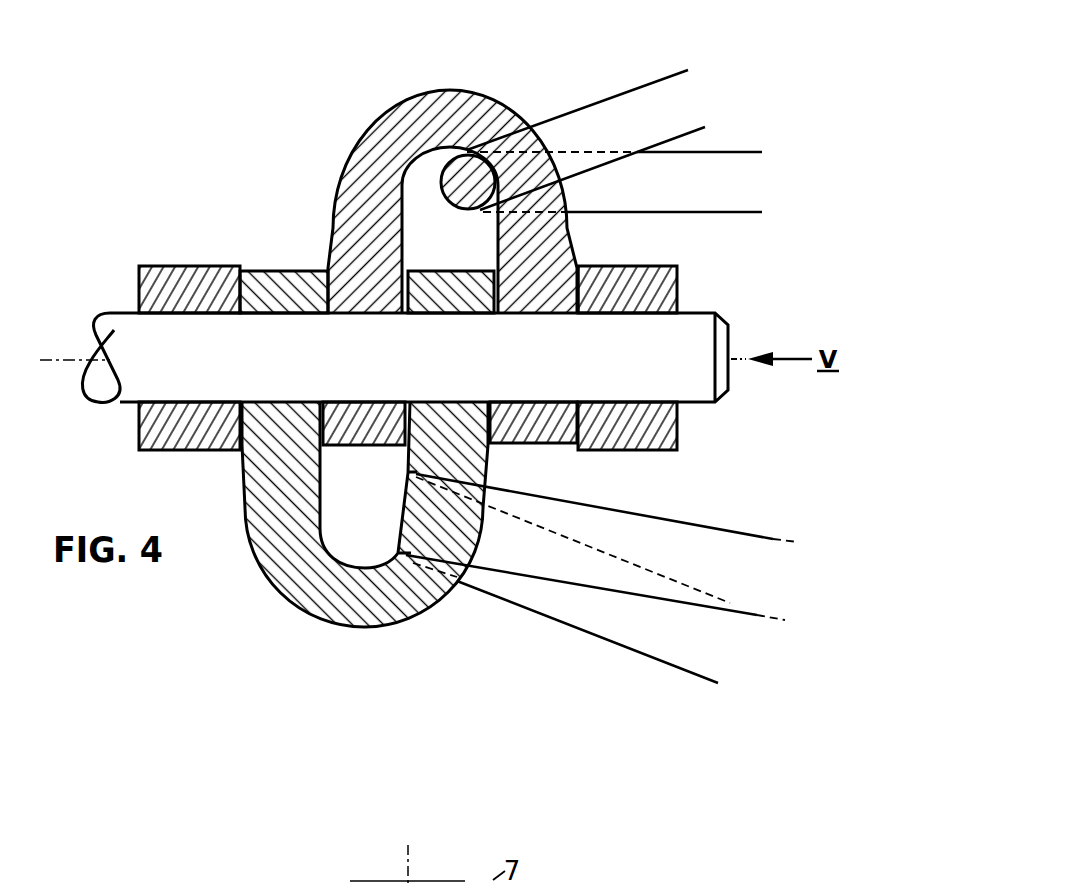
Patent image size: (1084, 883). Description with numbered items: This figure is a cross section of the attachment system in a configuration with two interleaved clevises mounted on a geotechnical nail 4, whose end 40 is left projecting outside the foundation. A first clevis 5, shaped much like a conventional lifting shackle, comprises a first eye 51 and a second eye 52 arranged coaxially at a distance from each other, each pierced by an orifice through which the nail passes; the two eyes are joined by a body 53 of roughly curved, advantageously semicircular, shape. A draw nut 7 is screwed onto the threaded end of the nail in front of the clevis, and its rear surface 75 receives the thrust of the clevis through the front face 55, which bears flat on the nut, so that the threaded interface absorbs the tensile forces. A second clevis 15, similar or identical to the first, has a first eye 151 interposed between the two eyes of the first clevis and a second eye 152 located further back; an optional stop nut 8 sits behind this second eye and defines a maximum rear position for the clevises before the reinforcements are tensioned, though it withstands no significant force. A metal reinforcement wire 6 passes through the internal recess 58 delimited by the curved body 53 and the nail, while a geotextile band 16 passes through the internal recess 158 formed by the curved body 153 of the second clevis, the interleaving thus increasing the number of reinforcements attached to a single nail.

The geotechnical nail 4 is at (384, 349).
The clevis 5 is at (437, 160).
The reinforcement wire 6 is at (627, 110).
The draw nut 7 is at (671, 335).
The stop nut 8 is at (162, 278).
The second clevis 15 is at (351, 557).
The geotextile band 16 is at (728, 538).
The end of the nail 40 is at (680, 378).
The first eye 51 is at (551, 422).
The second eye 52 is at (368, 432).
The body 53 is at (358, 133).
The front face 55 is at (578, 298).
The internal recess 58 is at (427, 180).
The rear surface 75 is at (580, 300).
The first eye 151 is at (453, 285).
The second eye 152 is at (273, 287).
The curved body 153 is at (273, 580).
The internal recess 158 is at (342, 537).